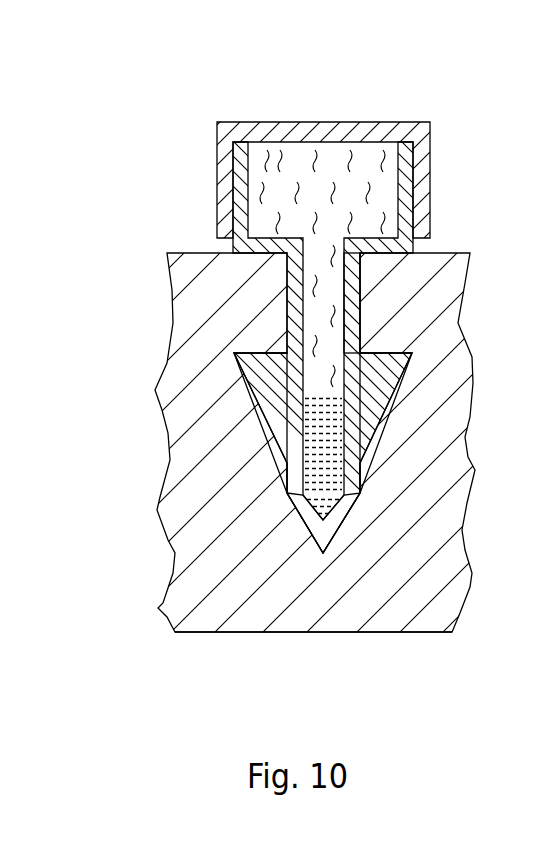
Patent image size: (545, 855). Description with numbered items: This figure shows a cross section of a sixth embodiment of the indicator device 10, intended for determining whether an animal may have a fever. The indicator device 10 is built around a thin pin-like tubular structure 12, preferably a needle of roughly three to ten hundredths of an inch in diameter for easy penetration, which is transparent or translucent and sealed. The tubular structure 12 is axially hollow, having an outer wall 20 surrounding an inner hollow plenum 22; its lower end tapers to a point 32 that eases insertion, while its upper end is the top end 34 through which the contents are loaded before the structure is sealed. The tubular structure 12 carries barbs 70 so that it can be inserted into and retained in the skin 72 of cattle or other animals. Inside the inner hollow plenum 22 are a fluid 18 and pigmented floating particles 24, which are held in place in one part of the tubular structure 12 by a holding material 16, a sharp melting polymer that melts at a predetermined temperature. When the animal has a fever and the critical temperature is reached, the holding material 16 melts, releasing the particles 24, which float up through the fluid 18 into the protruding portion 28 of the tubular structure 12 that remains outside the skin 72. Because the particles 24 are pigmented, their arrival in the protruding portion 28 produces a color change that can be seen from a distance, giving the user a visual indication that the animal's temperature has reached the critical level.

The indicator device 10 is at (177, 74).
The tubular structure 12 is at (290, 330).
The holding material 16 is at (346, 410).
The fluid 18 is at (357, 325).
The outer wall 20 is at (300, 288).
The inner hollow plenum 22 is at (342, 346).
The particles 24 is at (302, 492).
The protruding portion 28 is at (402, 198).
The point 32 is at (325, 556).
The top end 34 is at (265, 147).
The barbs 70 is at (272, 418).
The skin 72 is at (247, 623).